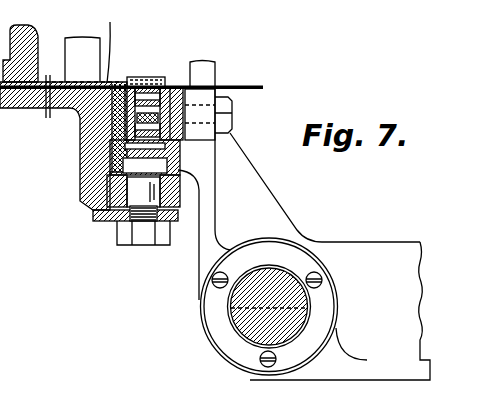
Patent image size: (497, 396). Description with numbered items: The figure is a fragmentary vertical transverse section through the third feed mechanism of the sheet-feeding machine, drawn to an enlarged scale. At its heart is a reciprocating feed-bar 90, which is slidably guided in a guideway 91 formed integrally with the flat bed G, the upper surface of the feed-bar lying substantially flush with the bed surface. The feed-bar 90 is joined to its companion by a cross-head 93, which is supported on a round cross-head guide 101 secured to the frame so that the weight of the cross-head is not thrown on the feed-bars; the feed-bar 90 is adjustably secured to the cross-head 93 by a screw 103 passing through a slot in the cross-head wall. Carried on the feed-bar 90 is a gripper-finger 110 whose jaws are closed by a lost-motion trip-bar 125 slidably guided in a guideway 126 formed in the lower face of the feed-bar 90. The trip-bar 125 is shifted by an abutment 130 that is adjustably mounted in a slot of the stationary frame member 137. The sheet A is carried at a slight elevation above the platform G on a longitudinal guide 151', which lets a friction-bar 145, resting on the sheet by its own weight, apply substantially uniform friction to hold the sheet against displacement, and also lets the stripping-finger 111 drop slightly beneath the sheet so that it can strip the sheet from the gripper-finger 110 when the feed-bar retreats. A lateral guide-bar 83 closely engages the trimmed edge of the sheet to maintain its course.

The lateral guide-bar 83 is at (41, 47).
The longitudinal guide 151' is at (103, 45).
The stripping-finger 111 is at (93, 66).
The guideway 126 is at (118, 83).
The gripper-finger 110 is at (147, 78).
The feed-bar 90 is at (178, 85).
The friction-bar 145 is at (215, 77).
The sheet A is at (254, 88).
The screw 103 is at (236, 110).
The lost-motion trip-bar 125 is at (177, 157).
The guideway 91 is at (92, 163).
The abutment 130 is at (94, 209).
The stationary frame member 137 is at (151, 223).
The flat bed G is at (70, 96).
The cross-head 93 is at (304, 234).
The cross-head guide 101 is at (241, 331).